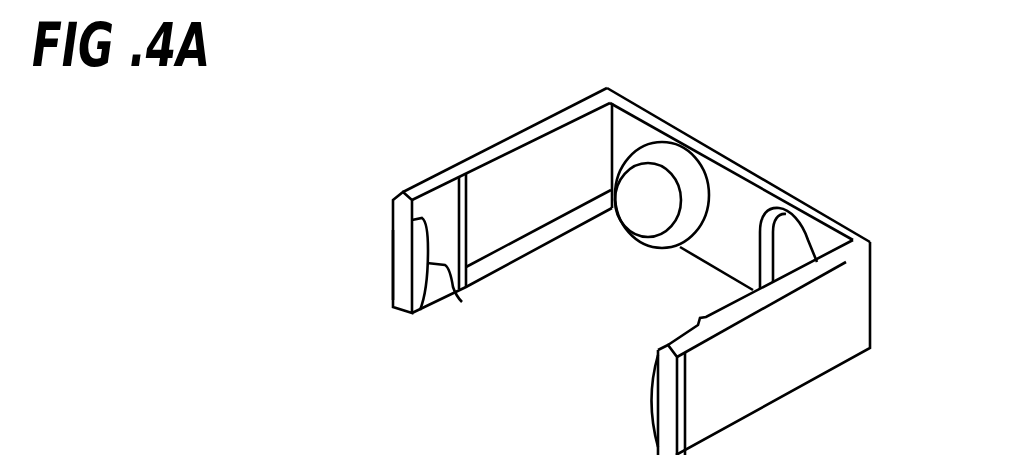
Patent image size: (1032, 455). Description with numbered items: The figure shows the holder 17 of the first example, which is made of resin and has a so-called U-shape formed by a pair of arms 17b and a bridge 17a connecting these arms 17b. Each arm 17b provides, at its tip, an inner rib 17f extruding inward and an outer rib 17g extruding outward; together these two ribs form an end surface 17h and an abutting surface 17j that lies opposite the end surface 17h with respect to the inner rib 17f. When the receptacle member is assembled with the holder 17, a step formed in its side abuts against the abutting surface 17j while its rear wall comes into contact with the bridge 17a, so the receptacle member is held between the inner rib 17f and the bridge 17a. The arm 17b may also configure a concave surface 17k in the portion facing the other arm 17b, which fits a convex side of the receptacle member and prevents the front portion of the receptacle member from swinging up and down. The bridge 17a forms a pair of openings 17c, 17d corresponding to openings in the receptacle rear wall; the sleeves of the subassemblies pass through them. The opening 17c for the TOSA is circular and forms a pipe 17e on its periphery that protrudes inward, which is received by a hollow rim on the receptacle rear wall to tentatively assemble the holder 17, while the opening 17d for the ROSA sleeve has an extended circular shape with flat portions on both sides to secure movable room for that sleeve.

The holder 17 is at (825, 81).
The bridge 17a is at (783, 184).
The arm 17b is at (497, 148).
The opening 17c is at (640, 208).
The opening 17d is at (782, 240).
The pipe 17e is at (663, 158).
The inner rib 17f is at (418, 305).
The outer rib 17g is at (392, 263).
The end surface 17h is at (402, 272).
The abutting surface 17j is at (457, 291).
The concave surface 17k is at (510, 217).